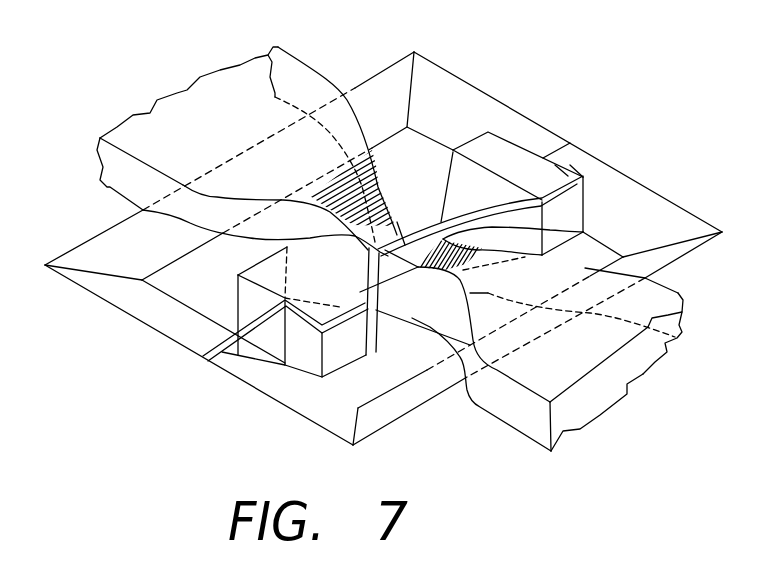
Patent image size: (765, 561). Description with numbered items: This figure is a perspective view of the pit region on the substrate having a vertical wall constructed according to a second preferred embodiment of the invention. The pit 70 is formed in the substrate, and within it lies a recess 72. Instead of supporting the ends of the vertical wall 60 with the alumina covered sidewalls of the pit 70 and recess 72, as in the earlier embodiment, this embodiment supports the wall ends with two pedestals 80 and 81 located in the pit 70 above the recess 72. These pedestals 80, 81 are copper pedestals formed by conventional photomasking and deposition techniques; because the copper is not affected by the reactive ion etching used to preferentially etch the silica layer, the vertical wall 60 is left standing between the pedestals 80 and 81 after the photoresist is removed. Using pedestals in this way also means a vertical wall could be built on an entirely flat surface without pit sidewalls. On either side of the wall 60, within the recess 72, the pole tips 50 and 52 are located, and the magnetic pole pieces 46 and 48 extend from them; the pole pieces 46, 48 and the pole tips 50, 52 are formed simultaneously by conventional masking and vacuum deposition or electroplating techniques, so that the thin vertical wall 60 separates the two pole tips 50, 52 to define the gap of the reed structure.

The magnetic pole piece 46 is at (190, 117).
The magnetic pole piece 48 is at (586, 361).
The pole tip 50 is at (397, 222).
The pole tip 52 is at (585, 230).
The vertical wall 60 is at (413, 243).
The pit 70 is at (118, 252).
The recess 72 is at (396, 320).
The pedestal 80 is at (512, 153).
The pedestal 81 is at (262, 276).